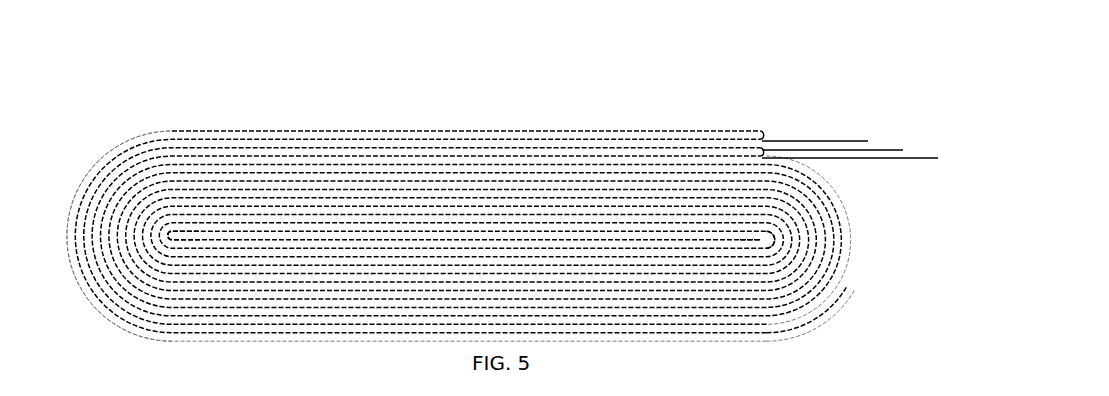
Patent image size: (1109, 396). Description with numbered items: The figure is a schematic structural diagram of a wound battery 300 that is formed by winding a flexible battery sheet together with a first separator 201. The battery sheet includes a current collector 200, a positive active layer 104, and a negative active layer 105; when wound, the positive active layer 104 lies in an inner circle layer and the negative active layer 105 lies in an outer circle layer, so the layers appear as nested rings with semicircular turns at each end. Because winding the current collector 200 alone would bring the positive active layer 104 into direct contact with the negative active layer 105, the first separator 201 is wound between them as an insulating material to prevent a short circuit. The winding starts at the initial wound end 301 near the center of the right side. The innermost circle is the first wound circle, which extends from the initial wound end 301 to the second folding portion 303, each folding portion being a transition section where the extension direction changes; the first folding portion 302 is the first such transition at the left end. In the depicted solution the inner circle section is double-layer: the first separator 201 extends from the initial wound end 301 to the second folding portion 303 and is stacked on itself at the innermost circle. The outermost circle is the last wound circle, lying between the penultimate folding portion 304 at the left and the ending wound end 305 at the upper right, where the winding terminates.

The wound battery 300 is at (504, 224).
The ending wound end 305 is at (752, 146).
The first separator 201 is at (906, 250).
The positive active layer 104 is at (829, 140).
The current collector 200 is at (846, 149).
The negative active layer 105 is at (864, 157).
The penultimate folding portion 304 is at (88, 235).
The first folding portion 302 is at (152, 242).
The second folding portion 303 is at (791, 253).
The initial wound end 301 is at (755, 253).